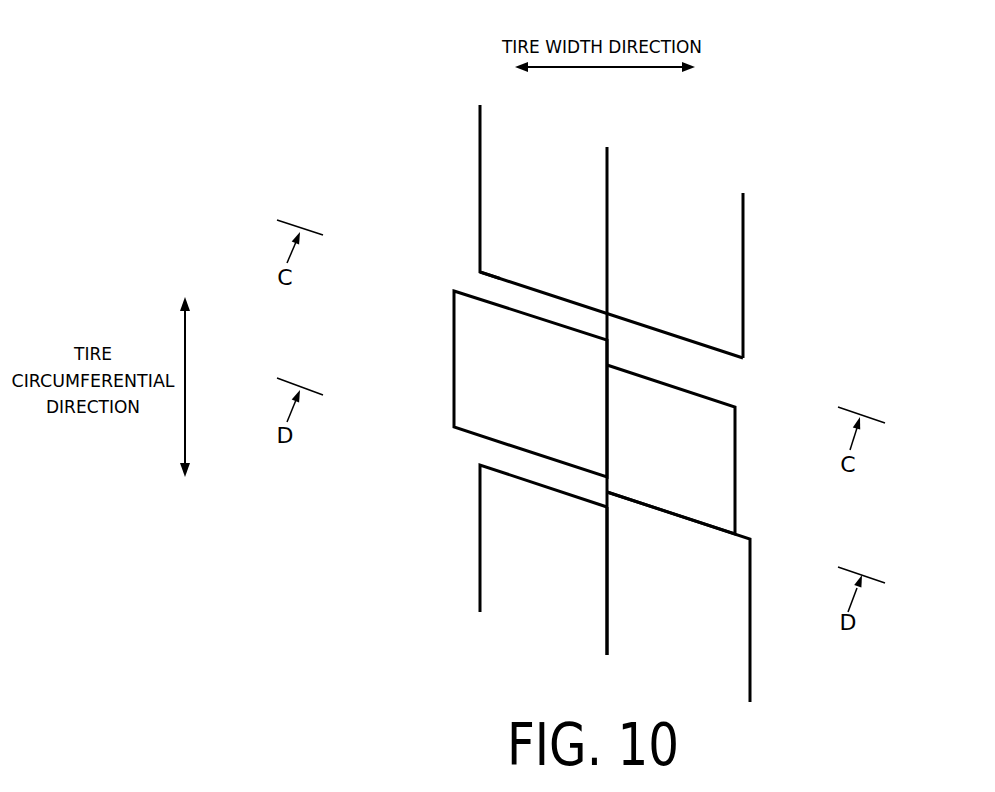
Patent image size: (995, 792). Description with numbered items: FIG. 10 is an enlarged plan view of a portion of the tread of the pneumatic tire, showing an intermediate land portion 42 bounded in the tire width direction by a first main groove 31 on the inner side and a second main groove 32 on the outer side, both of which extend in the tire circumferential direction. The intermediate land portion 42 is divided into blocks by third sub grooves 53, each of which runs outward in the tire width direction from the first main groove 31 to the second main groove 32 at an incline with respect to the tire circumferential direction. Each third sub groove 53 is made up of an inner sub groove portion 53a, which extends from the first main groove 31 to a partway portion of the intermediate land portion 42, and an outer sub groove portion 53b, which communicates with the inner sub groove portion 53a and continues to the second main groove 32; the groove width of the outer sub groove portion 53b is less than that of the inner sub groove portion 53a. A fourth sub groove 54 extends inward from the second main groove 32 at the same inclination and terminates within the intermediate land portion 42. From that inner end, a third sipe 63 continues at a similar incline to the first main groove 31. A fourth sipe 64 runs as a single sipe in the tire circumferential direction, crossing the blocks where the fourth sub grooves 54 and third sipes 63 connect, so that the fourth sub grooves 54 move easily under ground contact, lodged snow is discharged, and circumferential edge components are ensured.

The intermediate land portion 42 is at (728, 268).
The first main groove 31 is at (837, 328).
The second main groove 32 is at (385, 496).
The third sub groove 53 is at (725, 356).
The inner sub groove portion 53a is at (717, 400).
The outer sub groove portion 53b is at (497, 276).
The fourth sub groove 54 is at (502, 447).
The third sipe 63 is at (715, 522).
The fourth sipe 64 is at (608, 632).